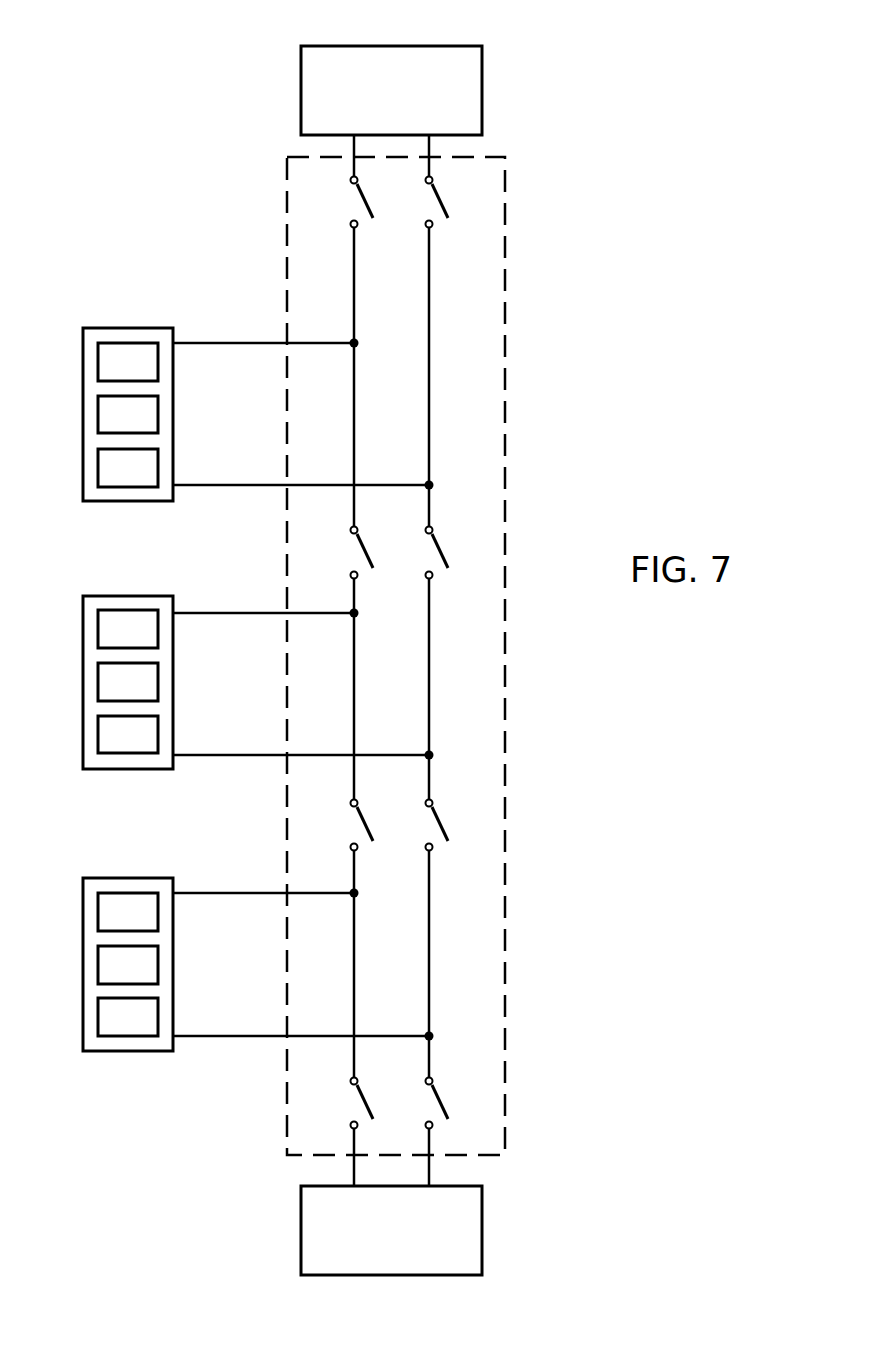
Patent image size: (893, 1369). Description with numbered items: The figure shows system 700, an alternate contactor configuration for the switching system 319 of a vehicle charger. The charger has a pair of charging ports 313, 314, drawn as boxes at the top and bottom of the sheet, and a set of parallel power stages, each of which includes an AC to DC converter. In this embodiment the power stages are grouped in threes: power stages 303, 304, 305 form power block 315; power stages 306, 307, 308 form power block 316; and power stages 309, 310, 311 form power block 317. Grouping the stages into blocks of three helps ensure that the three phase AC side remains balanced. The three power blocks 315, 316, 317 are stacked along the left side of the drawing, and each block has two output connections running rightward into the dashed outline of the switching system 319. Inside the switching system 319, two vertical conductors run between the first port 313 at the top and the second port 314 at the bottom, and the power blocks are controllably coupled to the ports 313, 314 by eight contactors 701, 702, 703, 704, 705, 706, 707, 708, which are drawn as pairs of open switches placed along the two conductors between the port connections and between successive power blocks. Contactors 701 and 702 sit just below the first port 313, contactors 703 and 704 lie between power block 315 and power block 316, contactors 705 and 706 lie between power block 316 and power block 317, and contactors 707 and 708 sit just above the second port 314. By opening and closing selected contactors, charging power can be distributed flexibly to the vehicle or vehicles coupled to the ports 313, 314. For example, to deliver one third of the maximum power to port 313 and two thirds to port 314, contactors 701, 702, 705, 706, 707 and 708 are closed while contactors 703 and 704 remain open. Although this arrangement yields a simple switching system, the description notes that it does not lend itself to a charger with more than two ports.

The system 700 is at (405, 651).
The charging port 313 is at (482, 103).
The charging port 314 is at (482, 1260).
The power block 315 is at (128, 328).
The power block 316 is at (128, 596).
The power block 317 is at (128, 878).
The switching system 319 is at (512, 315).
The power stage 303 is at (128, 362).
The power stage 304 is at (128, 414).
The power stage 305 is at (128, 468).
The power stage 306 is at (128, 629).
The power stage 307 is at (128, 682).
The power stage 308 is at (128, 734).
The power stage 309 is at (128, 912).
The power stage 310 is at (128, 965).
The power stage 311 is at (128, 1017).
The contactor 701 is at (341, 203).
The contactor 702 is at (416, 203).
The contactor 703 is at (341, 553).
The contactor 704 is at (416, 553).
The contactor 705 is at (348, 826).
The contactor 706 is at (423, 826).
The contactor 707 is at (348, 1101).
The contactor 708 is at (423, 1101).